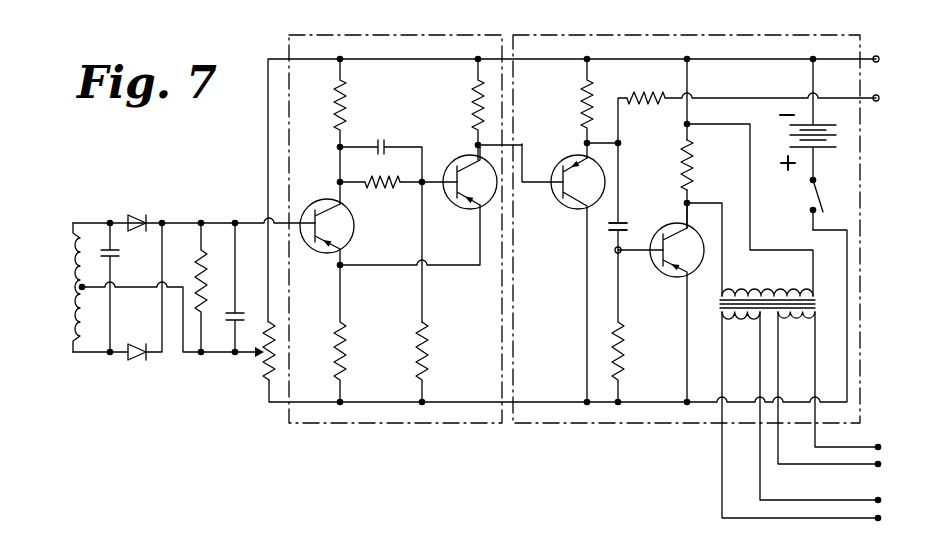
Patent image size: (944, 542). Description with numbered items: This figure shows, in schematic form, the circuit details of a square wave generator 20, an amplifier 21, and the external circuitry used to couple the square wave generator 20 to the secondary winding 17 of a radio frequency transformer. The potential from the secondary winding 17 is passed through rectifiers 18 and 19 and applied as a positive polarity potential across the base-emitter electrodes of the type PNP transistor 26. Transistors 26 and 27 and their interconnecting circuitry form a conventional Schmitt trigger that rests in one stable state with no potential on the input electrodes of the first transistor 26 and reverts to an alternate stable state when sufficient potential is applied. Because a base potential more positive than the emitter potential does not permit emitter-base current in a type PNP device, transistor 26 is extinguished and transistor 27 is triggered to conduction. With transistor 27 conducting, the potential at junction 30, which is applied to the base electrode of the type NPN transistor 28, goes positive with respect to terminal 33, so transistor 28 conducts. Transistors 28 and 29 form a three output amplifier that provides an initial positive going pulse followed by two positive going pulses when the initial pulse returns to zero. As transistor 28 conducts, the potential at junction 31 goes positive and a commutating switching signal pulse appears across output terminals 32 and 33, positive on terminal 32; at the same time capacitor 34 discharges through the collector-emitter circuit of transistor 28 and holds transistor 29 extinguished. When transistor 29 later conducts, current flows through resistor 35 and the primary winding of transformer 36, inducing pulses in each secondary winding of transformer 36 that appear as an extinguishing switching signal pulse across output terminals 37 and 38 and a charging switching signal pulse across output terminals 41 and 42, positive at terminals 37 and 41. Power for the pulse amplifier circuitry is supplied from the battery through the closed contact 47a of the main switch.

The secondary winding 17 is at (73, 243).
The rectifier 18 is at (131, 214).
The rectifier 19 is at (130, 357).
The square wave generator 20 is at (356, 36).
The amplifier 21 is at (692, 36).
The transistor 26 is at (353, 232).
The transistor 27 is at (461, 204).
The transistor 28 is at (578, 207).
The transistor 29 is at (680, 277).
The junction 30 is at (476, 145).
The junction 31 is at (582, 143).
The output terminal 32 is at (876, 103).
The output terminal 33 is at (876, 56).
The capacitor 34 is at (627, 224).
The resistor 35 is at (683, 155).
The transformer 36 is at (845, 314).
The output terminal 37 is at (878, 444).
The output terminal 38 is at (878, 466).
The output terminal 41 is at (878, 498).
The output terminal 42 is at (878, 521).
The closed contact of switch 47a is at (811, 198).